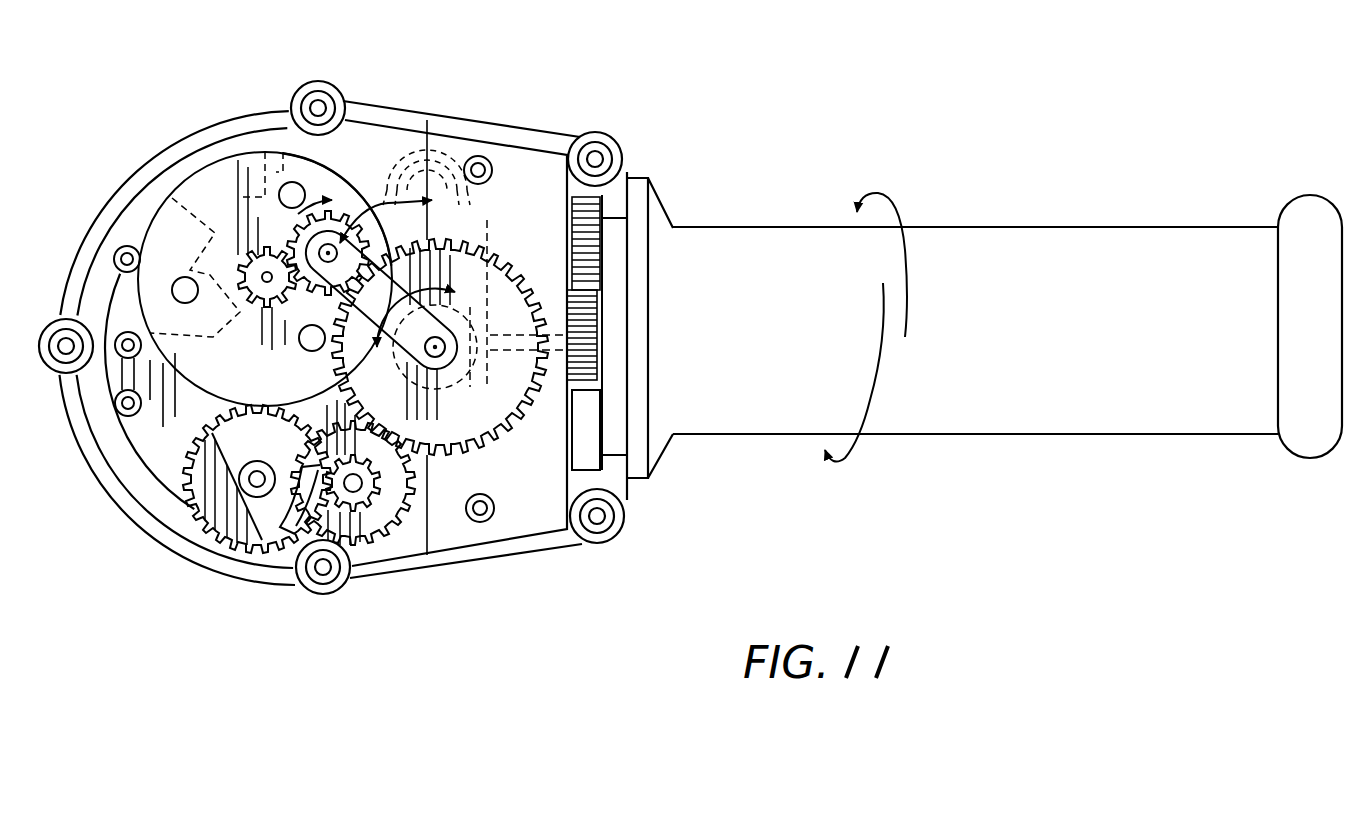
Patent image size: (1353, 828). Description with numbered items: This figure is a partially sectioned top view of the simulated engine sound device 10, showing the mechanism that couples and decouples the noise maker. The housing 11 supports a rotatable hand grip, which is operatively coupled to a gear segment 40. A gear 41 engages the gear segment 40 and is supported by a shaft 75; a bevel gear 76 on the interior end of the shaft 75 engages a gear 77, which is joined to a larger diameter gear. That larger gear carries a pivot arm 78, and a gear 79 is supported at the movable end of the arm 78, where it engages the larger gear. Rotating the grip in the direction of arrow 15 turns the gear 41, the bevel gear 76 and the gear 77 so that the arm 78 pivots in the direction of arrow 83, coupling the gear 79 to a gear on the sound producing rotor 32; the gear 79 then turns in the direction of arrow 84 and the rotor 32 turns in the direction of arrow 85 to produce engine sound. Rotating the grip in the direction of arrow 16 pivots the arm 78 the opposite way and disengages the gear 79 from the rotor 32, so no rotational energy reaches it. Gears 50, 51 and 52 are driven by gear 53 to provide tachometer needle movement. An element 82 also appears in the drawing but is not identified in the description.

The simulated engine sound device 10 is at (507, 108).
The housing 11 is at (381, 106).
The arrow 15 is at (880, 354).
The arrow 16 is at (908, 277).
The sound producing rotor 32 is at (222, 152).
The gear segment 40 is at (600, 250).
The gear 41 is at (600, 318).
The gear 50 is at (468, 512).
The gear 51 is at (385, 512).
The gear 52 is at (226, 414).
The gear 53 is at (430, 457).
The shaft 75 is at (555, 335).
The bevel gear 76 is at (488, 250).
The gear 77 is at (438, 380).
The pivot arm 78 is at (362, 357).
The gear 79 is at (364, 135).
The link arm 82 is at (372, 284).
The arrow 83 is at (388, 200).
The arrow 84 is at (283, 153).
The arrow 85 is at (275, 232).